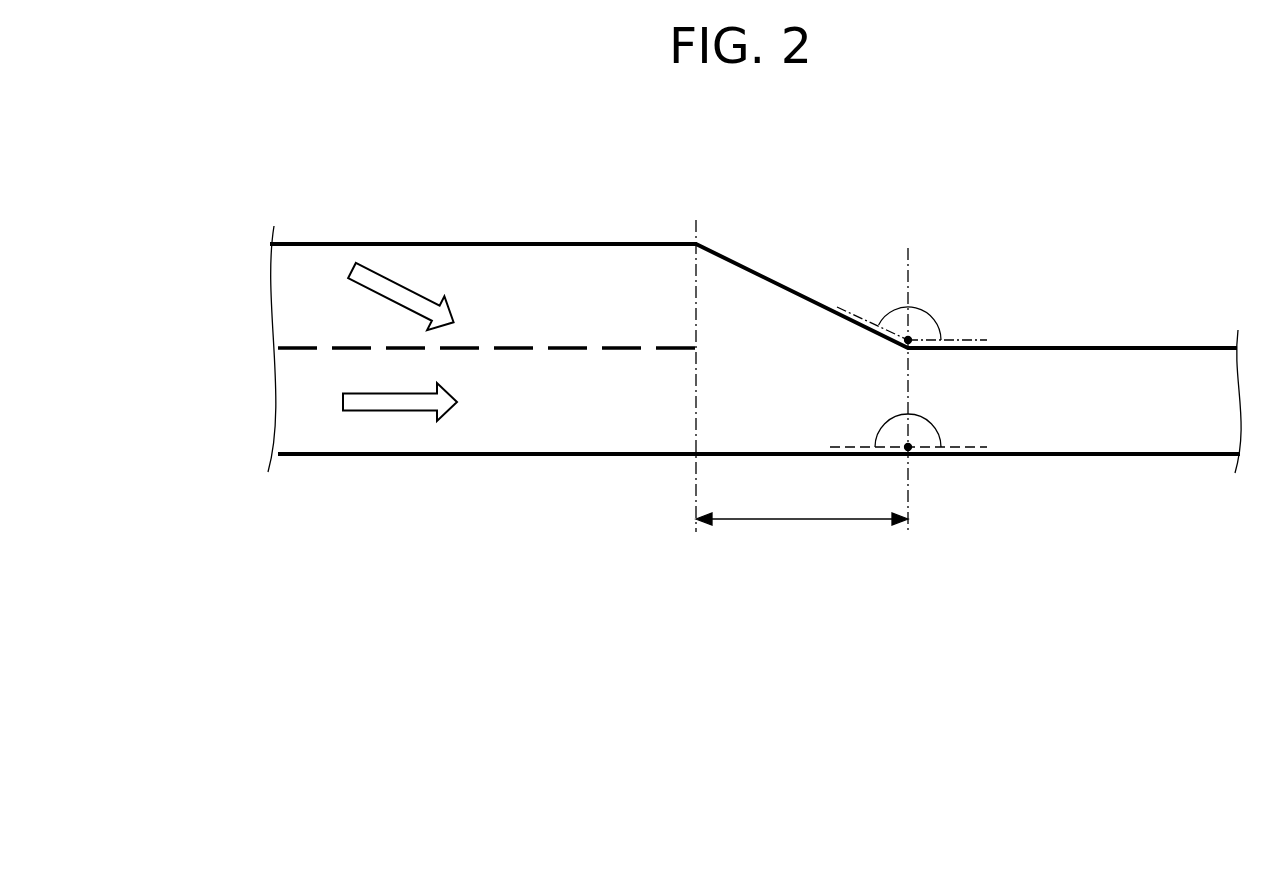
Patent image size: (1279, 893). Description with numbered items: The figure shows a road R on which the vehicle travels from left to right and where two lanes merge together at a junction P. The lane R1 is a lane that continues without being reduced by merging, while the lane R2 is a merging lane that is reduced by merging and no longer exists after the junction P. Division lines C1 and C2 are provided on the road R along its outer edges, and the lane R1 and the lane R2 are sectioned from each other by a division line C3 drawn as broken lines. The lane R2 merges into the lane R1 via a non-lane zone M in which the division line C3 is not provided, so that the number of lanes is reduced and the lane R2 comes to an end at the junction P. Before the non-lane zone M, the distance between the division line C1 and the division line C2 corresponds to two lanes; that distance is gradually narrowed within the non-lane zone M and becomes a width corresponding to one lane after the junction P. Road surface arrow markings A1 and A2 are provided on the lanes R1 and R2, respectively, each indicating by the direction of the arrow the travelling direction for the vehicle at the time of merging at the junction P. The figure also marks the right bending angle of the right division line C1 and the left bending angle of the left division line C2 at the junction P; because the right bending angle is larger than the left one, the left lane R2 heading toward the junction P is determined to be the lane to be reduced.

The division line C1 is at (620, 456).
The division line C2 is at (622, 243).
The division line C3 is at (300, 346).
The lane R1 is at (527, 427).
The lane R2 is at (478, 277).
The road surface arrow marking A1 is at (393, 412).
The road surface arrow marking A2 is at (402, 280).
The road R is at (1127, 458).
The junction P is at (908, 500).
The non-lane zone M is at (805, 521).